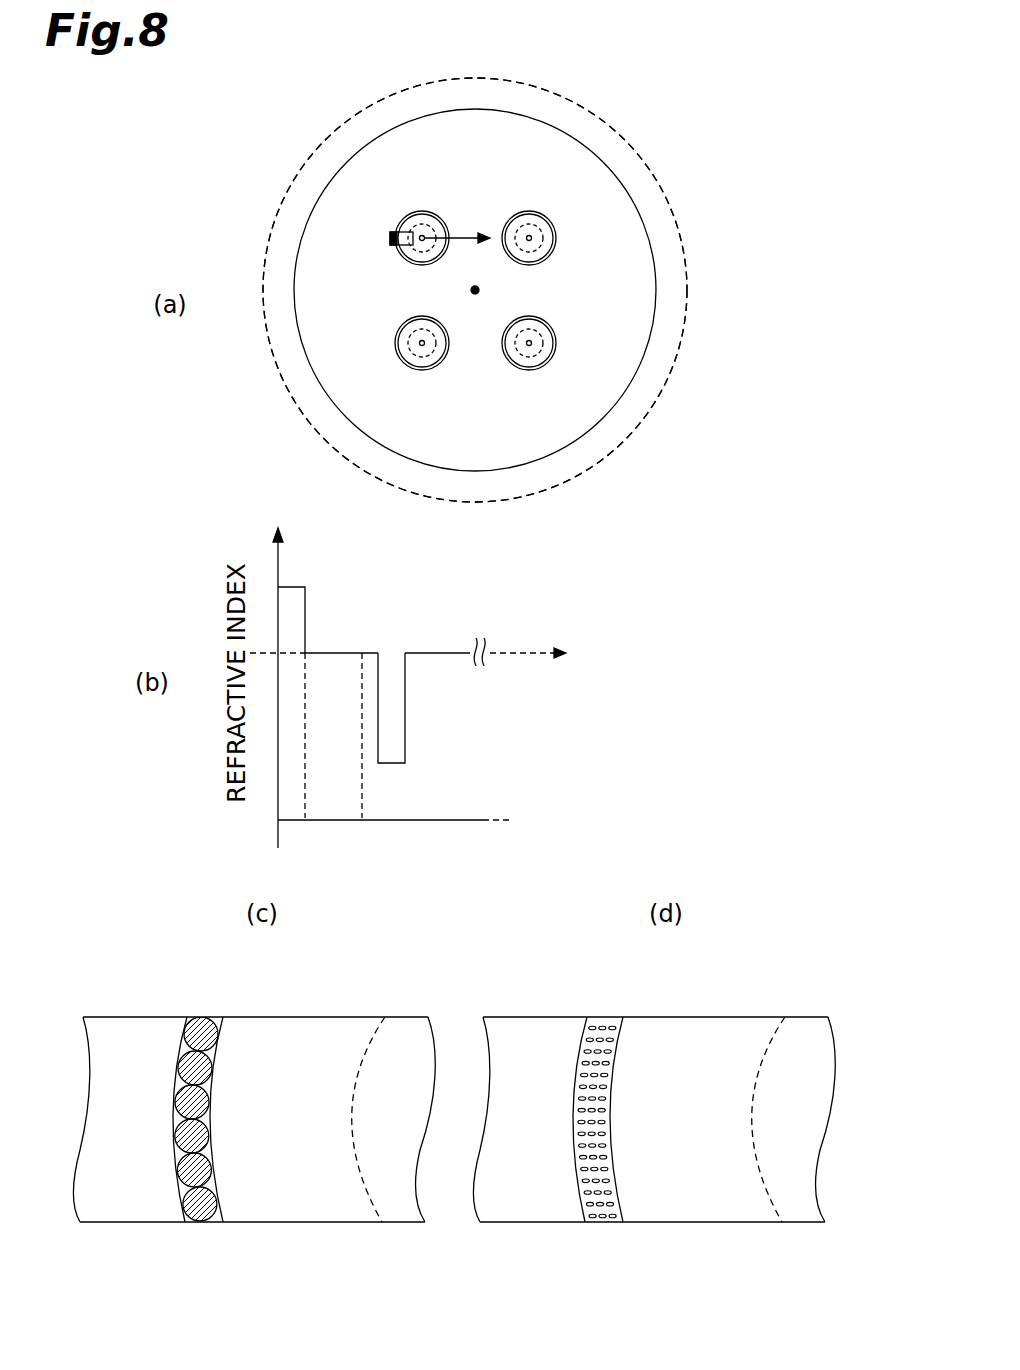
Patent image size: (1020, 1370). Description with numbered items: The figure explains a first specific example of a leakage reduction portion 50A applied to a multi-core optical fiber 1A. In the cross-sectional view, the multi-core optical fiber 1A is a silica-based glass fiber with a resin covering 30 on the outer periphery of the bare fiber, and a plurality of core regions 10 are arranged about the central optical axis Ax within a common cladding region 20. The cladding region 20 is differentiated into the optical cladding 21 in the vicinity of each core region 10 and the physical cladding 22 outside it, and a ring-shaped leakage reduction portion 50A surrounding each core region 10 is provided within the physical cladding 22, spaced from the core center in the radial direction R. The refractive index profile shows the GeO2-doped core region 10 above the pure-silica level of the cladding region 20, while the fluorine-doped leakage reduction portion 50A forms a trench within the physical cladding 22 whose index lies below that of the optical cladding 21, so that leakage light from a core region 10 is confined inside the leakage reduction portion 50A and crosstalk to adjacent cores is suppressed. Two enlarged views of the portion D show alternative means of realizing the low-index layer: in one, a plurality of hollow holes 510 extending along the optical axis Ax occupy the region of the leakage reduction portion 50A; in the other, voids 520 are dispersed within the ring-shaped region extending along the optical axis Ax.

The multi-core optical fiber 1A is at (708, 105).
The resin covering 30 is at (586, 112).
The cladding region 20 is at (740, 193).
The physical cladding 22 is at (645, 232).
The optical cladding 21 is at (556, 248).
The core region 10 is at (531, 236).
The leakage reduction portion 50A is at (420, 212).
The hollow holes 510 is at (175, 1152).
The voids 520 is at (575, 1152).
The portion D is at (390, 238).
The radial direction R is at (529, 435).
The optical axis Ax is at (475, 290).